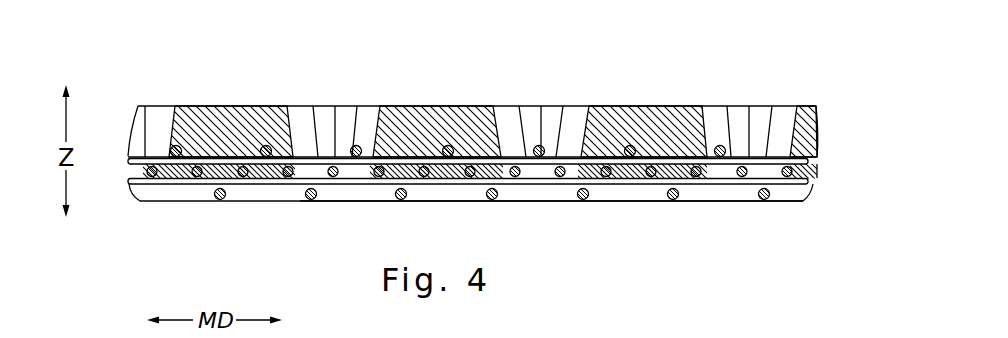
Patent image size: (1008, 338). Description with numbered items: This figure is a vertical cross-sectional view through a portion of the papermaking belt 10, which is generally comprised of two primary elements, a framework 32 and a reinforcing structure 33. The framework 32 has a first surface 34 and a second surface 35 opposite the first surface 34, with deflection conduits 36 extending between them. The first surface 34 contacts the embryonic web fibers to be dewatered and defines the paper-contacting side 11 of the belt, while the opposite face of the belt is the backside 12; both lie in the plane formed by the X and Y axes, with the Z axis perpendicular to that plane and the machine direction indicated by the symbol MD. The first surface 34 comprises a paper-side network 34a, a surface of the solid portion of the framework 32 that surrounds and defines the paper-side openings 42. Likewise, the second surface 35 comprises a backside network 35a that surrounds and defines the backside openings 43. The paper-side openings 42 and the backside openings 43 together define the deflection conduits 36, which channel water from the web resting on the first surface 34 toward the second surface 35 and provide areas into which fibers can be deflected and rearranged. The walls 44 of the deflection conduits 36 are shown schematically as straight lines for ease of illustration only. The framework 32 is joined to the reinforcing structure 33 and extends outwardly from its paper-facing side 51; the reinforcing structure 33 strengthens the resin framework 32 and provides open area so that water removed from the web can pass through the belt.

The papermaking belt 10 is at (501, 159).
The paper-contacting side 11 is at (810, 99).
The backside 12 is at (797, 215).
The framework 32 is at (439, 120).
The reinforcing structure 33 is at (723, 199).
The first surface 34 is at (194, 91).
The paper-side network 34a is at (266, 101).
The second surface 35 is at (487, 249).
The backside network 35a is at (221, 168).
The deflection conduits 36 is at (717, 122).
The paper-side openings 42 is at (591, 107).
The backside openings 43 is at (576, 184).
The walls 44 is at (296, 113).
The paper-facing side 51 is at (357, 146).